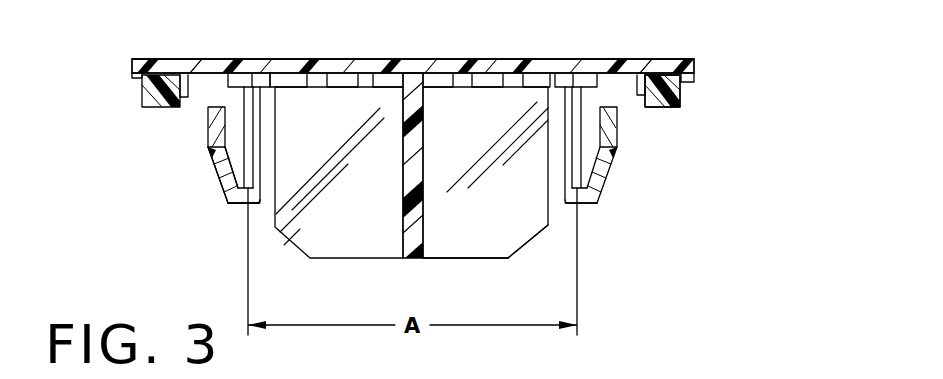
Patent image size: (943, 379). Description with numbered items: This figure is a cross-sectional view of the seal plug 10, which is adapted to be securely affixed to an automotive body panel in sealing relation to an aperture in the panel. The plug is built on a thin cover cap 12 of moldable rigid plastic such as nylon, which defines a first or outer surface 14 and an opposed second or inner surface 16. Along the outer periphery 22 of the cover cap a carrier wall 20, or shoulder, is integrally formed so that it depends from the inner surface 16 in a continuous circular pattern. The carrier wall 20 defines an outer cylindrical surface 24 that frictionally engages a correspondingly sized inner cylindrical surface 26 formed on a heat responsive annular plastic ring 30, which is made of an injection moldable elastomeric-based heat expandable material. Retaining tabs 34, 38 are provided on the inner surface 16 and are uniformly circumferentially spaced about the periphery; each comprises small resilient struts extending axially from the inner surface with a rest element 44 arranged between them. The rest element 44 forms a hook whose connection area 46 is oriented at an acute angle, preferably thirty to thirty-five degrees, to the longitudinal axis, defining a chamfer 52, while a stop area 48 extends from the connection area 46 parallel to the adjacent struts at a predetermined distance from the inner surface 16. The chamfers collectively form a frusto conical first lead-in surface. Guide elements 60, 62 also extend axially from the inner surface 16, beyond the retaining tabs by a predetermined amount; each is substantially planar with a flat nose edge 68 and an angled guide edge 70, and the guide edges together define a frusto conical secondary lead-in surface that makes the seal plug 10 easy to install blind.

The seal plug 10 is at (706, 52).
The cover cap 12 is at (438, 65).
The first or outer surface 14 is at (295, 63).
The second or inner surface 16 is at (217, 72).
The carrier wall 20 is at (200, 72).
The outer periphery 22 is at (683, 122).
The outer cylindrical surface 24 is at (145, 80).
The inner cylindrical surface 26 is at (184, 100).
The heat responsive annular plastic ring 30 is at (158, 82).
The retaining tab 34 is at (615, 208).
The retaining tab 38 is at (207, 215).
The rest element 44 is at (218, 198).
The connection area 46 is at (211, 168).
The stop area 48 is at (208, 131).
The chamfer 52 is at (216, 228).
The guide element 60 is at (492, 213).
The guide element 62 is at (357, 213).
The flat nose edge 68 is at (432, 259).
The angled guide edge 70 is at (521, 259).